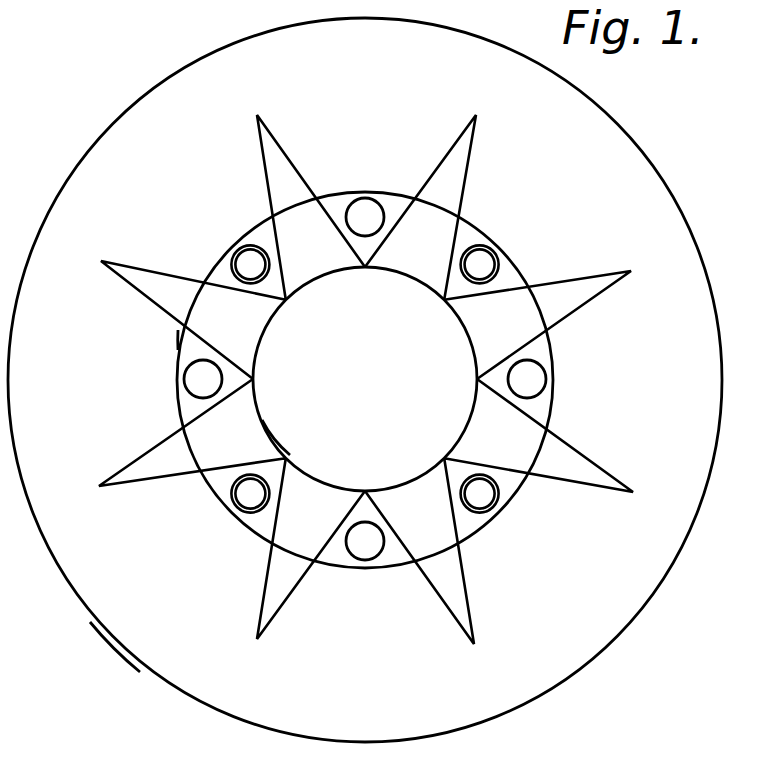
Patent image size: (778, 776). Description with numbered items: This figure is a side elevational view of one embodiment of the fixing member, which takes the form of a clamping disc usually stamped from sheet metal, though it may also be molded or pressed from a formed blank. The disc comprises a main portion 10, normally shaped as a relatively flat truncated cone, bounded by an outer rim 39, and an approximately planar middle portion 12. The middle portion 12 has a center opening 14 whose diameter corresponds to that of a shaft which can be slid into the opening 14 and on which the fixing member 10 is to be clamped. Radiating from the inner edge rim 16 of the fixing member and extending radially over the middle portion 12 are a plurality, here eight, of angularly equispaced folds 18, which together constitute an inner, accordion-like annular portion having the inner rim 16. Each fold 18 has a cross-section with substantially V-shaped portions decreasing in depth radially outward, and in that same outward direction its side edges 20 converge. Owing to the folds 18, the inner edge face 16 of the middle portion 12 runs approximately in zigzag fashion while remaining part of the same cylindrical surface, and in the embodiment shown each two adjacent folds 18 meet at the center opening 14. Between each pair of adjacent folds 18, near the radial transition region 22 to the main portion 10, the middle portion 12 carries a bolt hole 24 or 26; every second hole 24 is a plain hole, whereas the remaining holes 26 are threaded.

The main portion 10 is at (624, 610).
The middle portion 12 is at (270, 516).
The center opening 14 is at (439, 365).
The inner edge rim 16 is at (276, 422).
The folds 18 is at (175, 288).
The side edges 20 is at (502, 293).
The radial transition region 22 is at (180, 337).
The plain bolt hole 24 is at (367, 213).
The threaded bolt hole 26 is at (248, 257).
The outer rim 39 is at (113, 641).